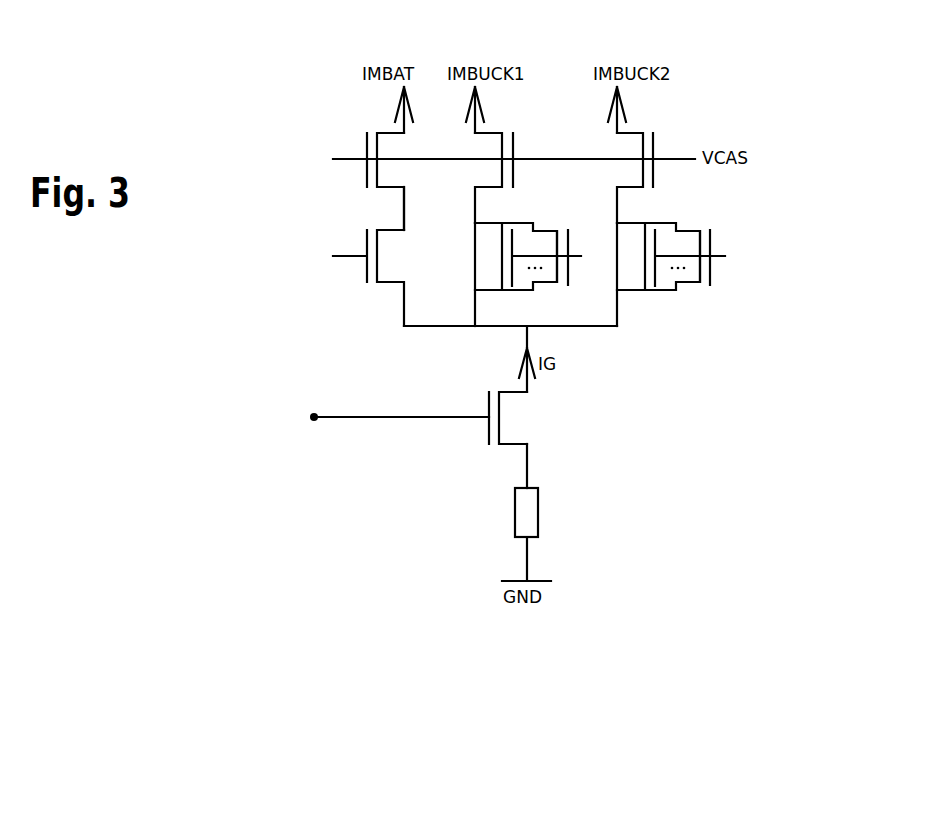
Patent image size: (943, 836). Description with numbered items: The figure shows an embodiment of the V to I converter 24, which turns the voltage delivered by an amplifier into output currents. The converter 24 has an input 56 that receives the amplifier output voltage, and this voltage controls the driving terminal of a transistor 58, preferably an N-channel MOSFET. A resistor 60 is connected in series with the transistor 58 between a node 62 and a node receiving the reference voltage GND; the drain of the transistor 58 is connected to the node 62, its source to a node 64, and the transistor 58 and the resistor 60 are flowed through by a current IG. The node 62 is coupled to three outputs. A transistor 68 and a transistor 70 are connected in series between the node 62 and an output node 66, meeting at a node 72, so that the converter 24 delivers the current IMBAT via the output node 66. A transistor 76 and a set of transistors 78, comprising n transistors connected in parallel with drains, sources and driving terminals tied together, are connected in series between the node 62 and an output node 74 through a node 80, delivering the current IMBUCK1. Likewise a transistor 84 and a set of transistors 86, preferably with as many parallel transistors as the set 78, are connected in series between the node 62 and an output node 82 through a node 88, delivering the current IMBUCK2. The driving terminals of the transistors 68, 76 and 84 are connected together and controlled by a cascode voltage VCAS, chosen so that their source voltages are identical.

The V to I converter 24 is at (740, 107).
The input 56 is at (314, 417).
The transistor 58 is at (487, 405).
The resistor 60 is at (527, 518).
The node 62 is at (525, 328).
The node 64 is at (527, 462).
The output node 66 is at (397, 114).
The transistor 68 is at (367, 148).
The transistor 70 is at (367, 242).
The node 72 is at (404, 200).
The output node 74 is at (467, 108).
The transistor 76 is at (513, 148).
The set of transistors 78 is at (545, 218).
The node 80 is at (474, 208).
The output node 82 is at (612, 108).
The transistor 84 is at (653, 145).
The set of transistors 86 is at (700, 218).
The node 88 is at (617, 208).